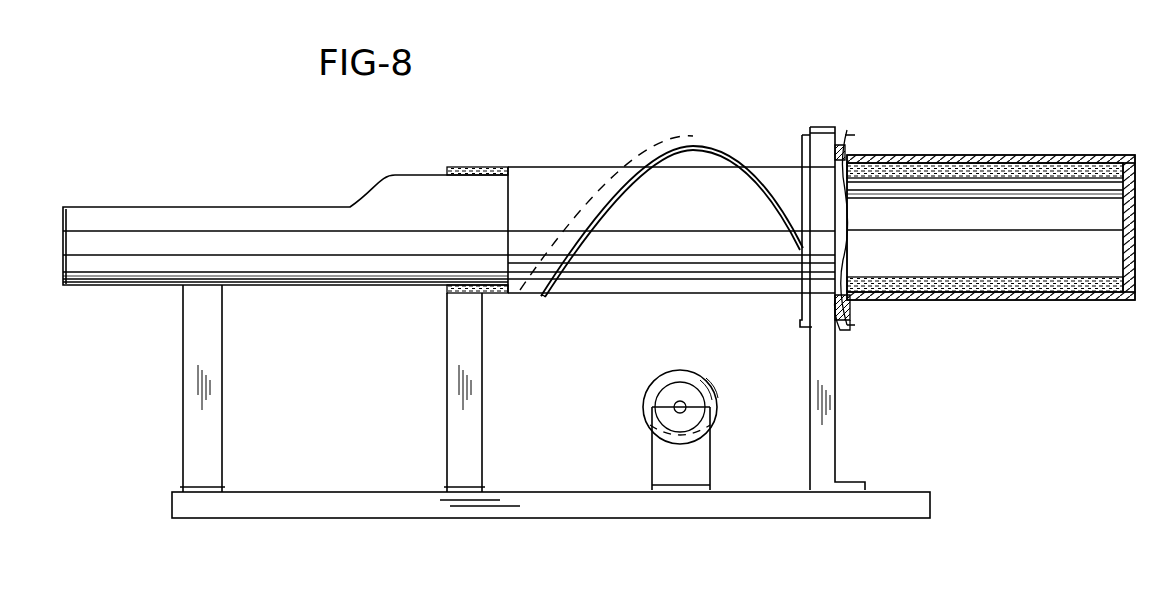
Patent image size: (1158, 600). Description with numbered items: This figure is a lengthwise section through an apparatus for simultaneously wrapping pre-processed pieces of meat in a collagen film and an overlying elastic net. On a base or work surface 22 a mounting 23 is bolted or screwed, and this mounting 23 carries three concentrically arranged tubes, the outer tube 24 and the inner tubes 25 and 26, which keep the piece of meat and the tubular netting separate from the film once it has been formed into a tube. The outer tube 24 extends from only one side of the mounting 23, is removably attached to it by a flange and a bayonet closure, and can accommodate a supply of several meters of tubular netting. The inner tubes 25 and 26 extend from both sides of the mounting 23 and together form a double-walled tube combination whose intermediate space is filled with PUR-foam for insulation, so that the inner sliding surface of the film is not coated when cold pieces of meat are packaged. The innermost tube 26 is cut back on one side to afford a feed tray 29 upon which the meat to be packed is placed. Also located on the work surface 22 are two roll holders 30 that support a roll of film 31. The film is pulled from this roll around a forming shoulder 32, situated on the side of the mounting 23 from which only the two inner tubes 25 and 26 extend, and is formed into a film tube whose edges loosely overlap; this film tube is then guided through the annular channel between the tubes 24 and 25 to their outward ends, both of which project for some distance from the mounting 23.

The work surface 22 is at (383, 492).
The mounting 23 is at (838, 380).
The outer tube 24 is at (985, 155).
The inner tube 25 is at (552, 168).
The inner tube 26 is at (288, 285).
The feed tray 29 is at (212, 218).
The roll holder 30 is at (662, 456).
The roll of film 31 is at (668, 372).
The forming shoulder 32 is at (686, 150).